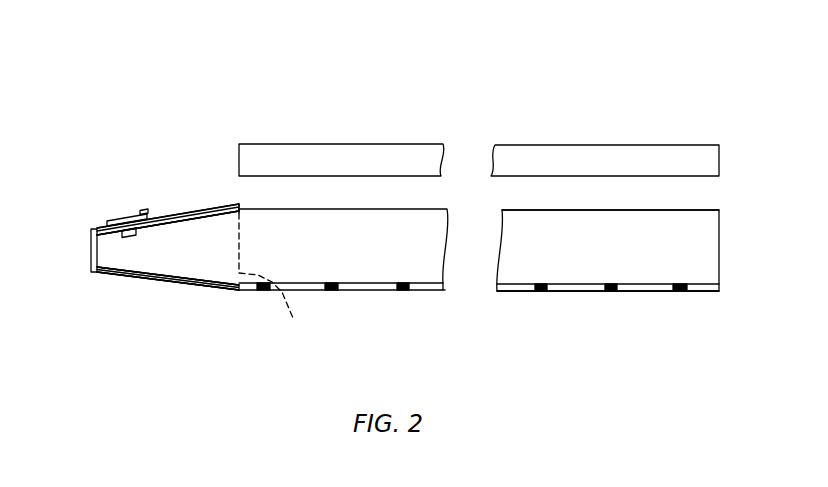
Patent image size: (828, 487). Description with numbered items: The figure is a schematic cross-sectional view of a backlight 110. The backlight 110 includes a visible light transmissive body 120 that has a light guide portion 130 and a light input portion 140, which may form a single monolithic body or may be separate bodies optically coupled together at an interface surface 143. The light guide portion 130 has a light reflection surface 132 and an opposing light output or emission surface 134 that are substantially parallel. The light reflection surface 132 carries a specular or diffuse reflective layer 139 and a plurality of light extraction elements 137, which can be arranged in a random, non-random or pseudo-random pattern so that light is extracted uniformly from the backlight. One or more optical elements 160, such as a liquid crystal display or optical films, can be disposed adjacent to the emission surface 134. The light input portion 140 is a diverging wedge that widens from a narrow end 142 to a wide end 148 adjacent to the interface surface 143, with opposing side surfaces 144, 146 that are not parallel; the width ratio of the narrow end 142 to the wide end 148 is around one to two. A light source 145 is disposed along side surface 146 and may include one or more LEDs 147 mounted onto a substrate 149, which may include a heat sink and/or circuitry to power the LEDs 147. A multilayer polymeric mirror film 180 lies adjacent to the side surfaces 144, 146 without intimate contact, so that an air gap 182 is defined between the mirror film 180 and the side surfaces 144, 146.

The backlight 110 is at (343, 122).
The visible light transmissive body 120 is at (220, 62).
The light guide portion 130 is at (651, 193).
The light reflection surface 132 is at (658, 285).
The emission surface 134 is at (573, 210).
The light extraction elements 137 is at (332, 292).
The reflective layer 139 is at (578, 292).
The light input portion 140 is at (105, 177).
The narrow end 142 is at (90, 252).
The interface surface 143 is at (279, 280).
The side surface 144 is at (203, 283).
The light source 145 is at (110, 220).
The side surface 146 is at (197, 212).
The LEDs 147 is at (130, 238).
The wide end 148 is at (240, 237).
The substrate 149 is at (143, 212).
The optical element 160 is at (707, 162).
The multilayer polymeric mirror film 180 is at (137, 278).
The air gap 182 is at (167, 226).